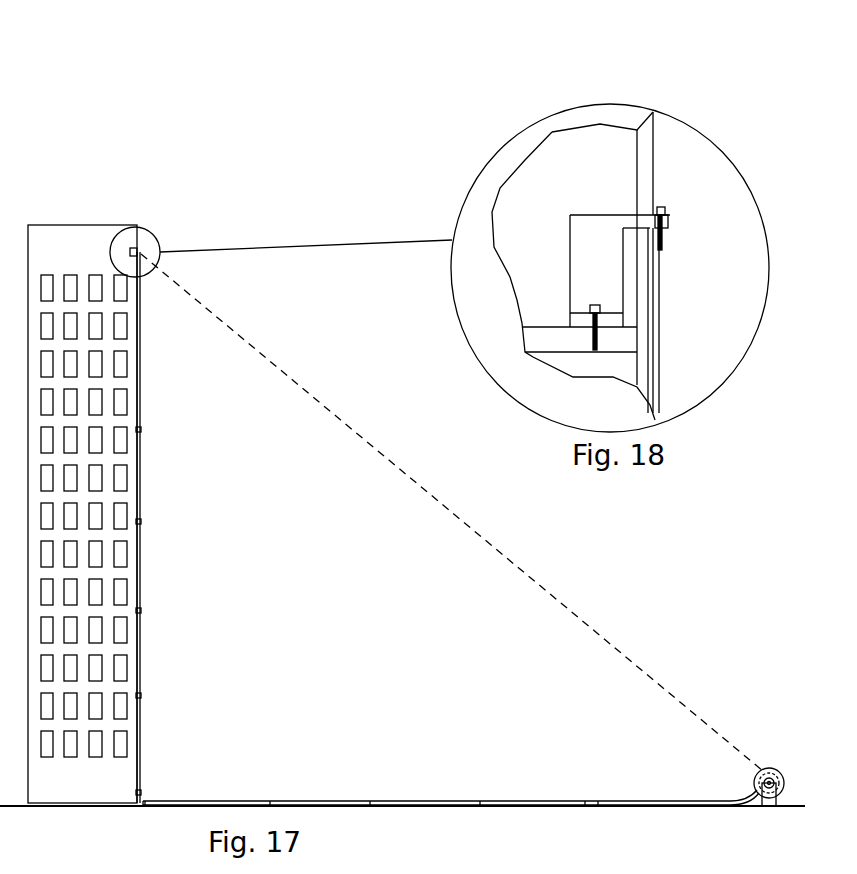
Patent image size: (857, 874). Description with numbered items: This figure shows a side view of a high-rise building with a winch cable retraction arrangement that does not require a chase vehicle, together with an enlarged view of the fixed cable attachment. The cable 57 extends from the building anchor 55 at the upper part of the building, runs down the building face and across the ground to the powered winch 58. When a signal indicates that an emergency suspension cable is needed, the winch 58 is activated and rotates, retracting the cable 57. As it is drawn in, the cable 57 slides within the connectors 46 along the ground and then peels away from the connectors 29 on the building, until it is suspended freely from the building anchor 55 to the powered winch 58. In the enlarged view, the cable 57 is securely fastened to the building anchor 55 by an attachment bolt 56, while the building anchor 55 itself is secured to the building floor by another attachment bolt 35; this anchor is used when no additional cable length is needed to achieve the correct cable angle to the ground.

In FIG. 17, the connectors 29 is at (141, 612).
In FIG. 17, the building anchor 55 is at (144, 246).
In FIG. 18, the building anchor 55 is at (592, 235).
In FIG. 17, the cable 57 is at (452, 528).
In FIG. 18, the cable 57 is at (660, 365).
In FIG. 17, the connectors 46 is at (370, 802).
In FIG. 17, the powered winch 58 is at (765, 807).
In FIG. 18, the attachment bolt 56 is at (663, 240).
In FIG. 18, the attachment bolt 35 is at (597, 330).